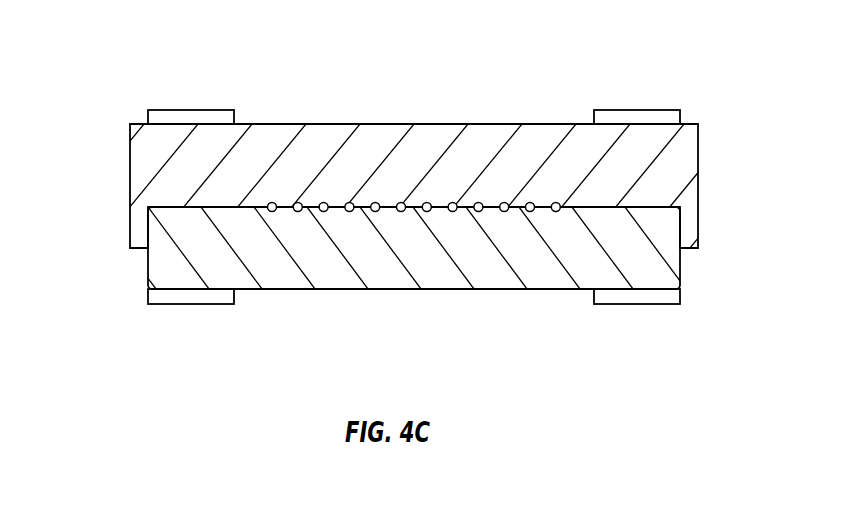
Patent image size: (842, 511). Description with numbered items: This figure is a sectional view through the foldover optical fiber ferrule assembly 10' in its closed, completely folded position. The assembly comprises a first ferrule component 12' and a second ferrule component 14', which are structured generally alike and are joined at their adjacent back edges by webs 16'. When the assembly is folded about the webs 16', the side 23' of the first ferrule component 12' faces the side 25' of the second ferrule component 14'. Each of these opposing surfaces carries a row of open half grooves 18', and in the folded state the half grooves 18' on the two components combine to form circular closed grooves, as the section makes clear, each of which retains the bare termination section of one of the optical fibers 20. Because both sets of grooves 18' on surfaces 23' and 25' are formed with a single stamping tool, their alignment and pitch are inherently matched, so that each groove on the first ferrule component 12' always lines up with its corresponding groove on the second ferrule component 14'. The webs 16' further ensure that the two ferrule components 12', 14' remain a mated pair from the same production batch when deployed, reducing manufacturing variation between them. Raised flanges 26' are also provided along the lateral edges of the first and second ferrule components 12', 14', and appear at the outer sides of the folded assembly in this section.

The foldover optical fiber ferrule assembly 10' is at (417, 192).
The first ferrule component 12' is at (417, 277).
The second ferrule component 14' is at (417, 160).
The webs 16' is at (406, 209).
The open half grooves 18' is at (414, 206).
The optical fibers 20 is at (453, 213).
The side of first ferrule component 23' is at (622, 128).
The side of second ferrule component 25' is at (205, 277).
The raised flanges 26' is at (413, 229).